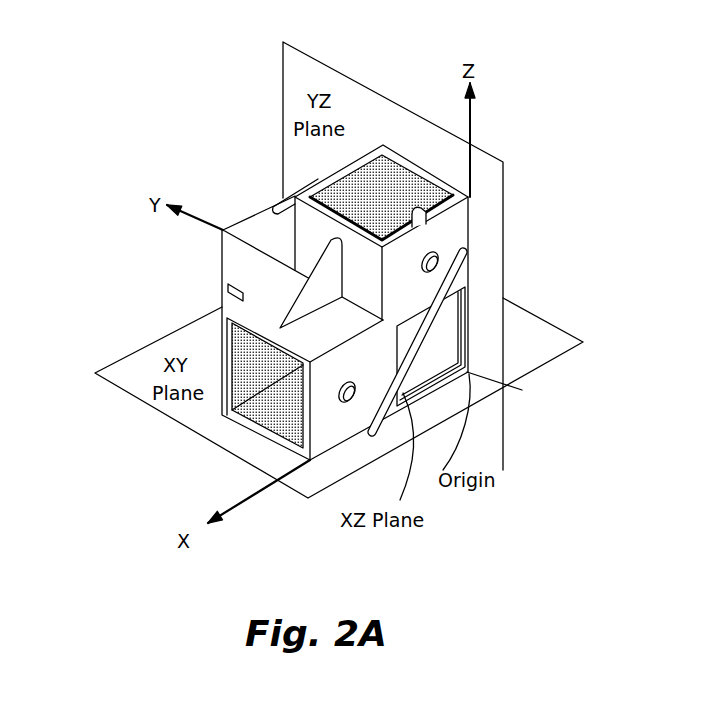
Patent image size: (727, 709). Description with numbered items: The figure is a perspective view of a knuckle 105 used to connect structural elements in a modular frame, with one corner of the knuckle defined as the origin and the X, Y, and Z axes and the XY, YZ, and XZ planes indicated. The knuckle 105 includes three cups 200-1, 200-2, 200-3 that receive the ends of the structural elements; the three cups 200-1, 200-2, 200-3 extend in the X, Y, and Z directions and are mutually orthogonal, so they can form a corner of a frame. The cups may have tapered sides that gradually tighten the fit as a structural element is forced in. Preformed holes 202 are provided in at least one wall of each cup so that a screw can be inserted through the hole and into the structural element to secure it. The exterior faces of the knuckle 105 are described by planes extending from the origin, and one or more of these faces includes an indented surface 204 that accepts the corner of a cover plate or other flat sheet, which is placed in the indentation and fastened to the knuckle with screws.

The knuckle 105 is at (137, 83).
The cup 200-1 is at (273, 415).
The cup 200-2 is at (403, 178).
The cup 200-3 is at (250, 210).
The preformed hole 202 is at (444, 254).
The indented surface 204 is at (428, 295).